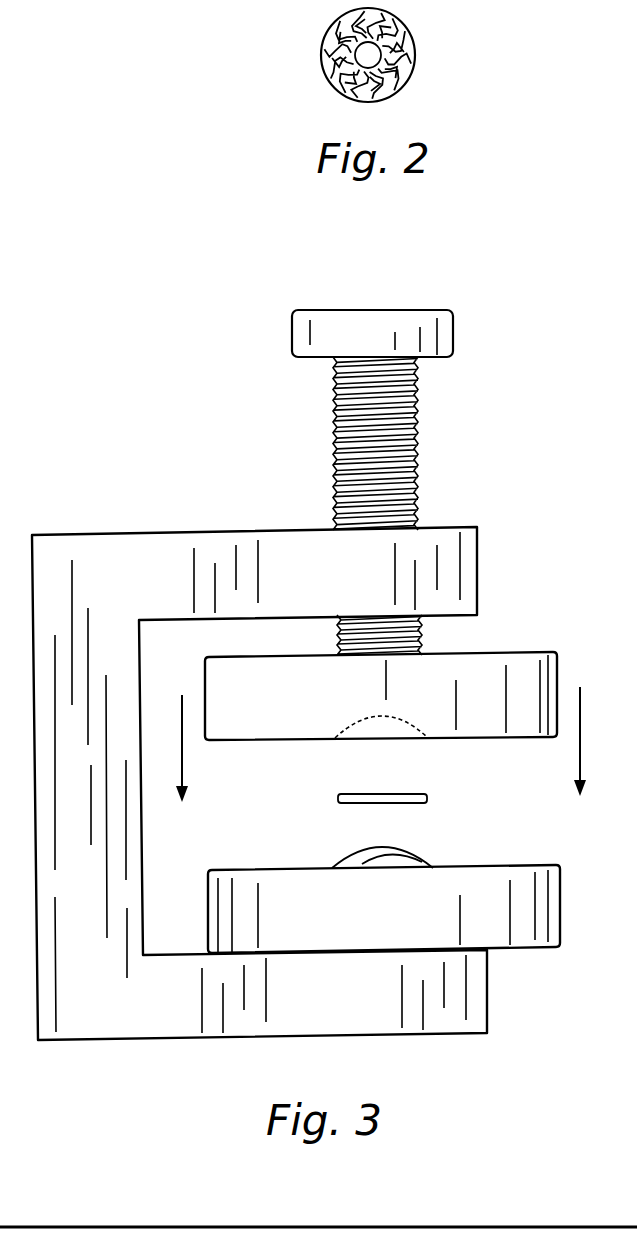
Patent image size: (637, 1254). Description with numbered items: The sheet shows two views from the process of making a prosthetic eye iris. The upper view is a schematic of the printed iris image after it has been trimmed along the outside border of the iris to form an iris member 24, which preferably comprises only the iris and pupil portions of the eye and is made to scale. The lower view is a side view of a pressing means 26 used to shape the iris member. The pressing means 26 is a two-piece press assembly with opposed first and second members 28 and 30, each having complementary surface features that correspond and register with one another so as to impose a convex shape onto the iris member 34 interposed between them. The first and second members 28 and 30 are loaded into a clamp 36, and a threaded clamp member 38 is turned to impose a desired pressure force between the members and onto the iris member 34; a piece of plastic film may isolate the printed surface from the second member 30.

In FIG. 2, the iris member 24 is at (322, 36).
In FIG. 3, the pressing means 26 is at (113, 384).
In FIG. 3, the first member 28 is at (528, 945).
In FIG. 3, the second member 30 is at (518, 655).
In FIG. 3, the iris member 34 is at (395, 793).
In FIG. 3, the clamp 36 is at (149, 556).
In FIG. 3, the threaded clamp member 38 is at (332, 430).